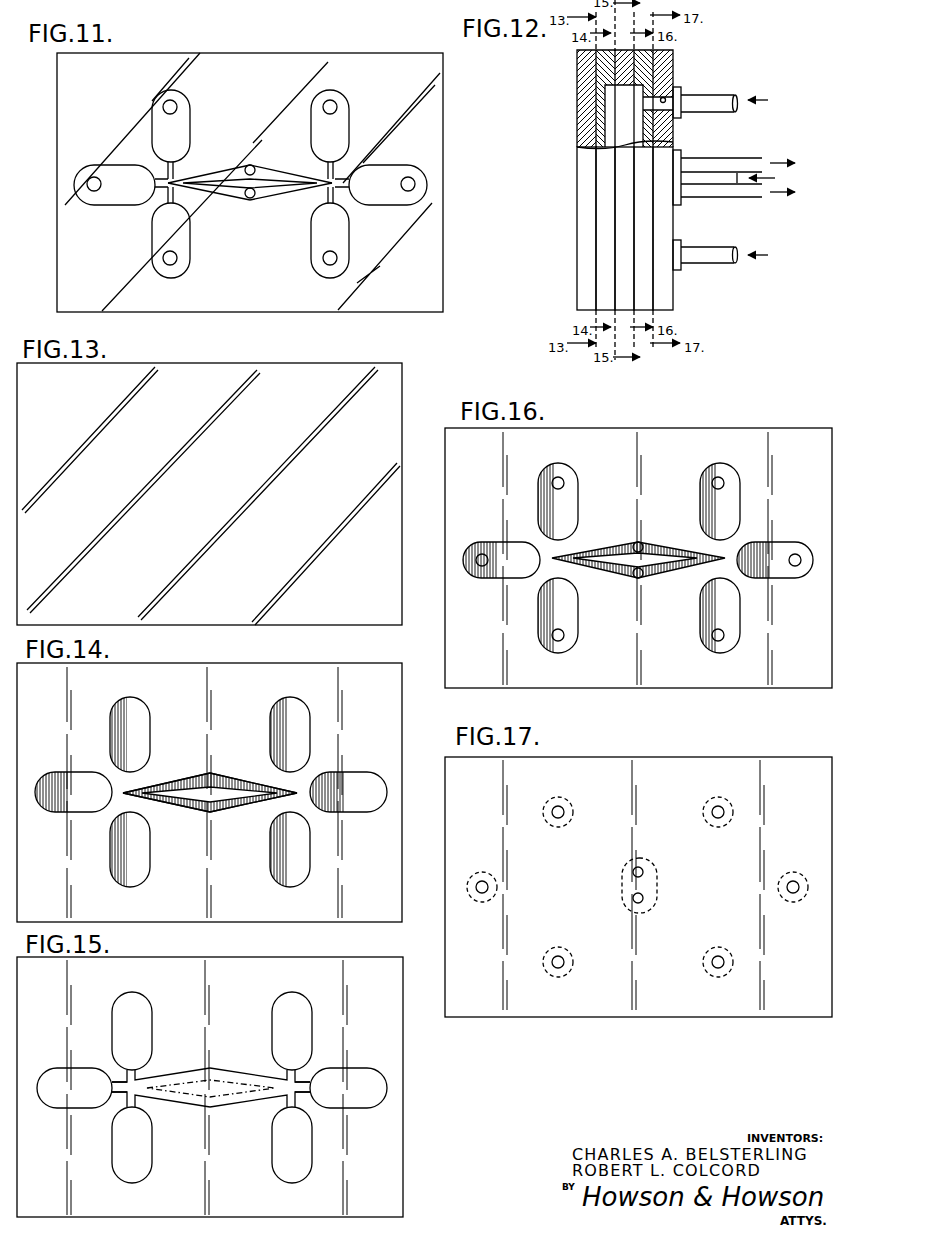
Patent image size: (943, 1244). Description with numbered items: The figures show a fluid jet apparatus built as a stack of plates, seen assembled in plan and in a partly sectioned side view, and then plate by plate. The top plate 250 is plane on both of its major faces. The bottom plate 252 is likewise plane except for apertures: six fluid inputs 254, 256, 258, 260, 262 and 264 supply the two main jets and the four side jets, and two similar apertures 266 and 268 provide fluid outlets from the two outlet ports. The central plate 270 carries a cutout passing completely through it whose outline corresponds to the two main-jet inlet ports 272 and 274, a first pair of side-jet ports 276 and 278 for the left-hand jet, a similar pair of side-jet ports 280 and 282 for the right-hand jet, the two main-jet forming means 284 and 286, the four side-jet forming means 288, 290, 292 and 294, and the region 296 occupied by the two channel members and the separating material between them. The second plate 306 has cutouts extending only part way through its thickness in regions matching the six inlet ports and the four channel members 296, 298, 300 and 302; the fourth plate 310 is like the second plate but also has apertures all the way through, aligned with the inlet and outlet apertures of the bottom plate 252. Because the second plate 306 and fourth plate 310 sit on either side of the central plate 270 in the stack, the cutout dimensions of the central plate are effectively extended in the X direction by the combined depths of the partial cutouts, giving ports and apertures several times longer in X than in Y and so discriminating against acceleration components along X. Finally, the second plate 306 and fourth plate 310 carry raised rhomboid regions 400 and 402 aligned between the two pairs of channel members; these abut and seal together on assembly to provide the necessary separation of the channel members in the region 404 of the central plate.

In FIG. 11, the top plate 250 is at (443, 117).
In FIG. 12, the top plate 250 is at (575, 182).
In FIG. 13, the top plate 250 is at (362, 367).
In FIG. 12, the bottom plate 252 is at (668, 293).
In FIG. 17, the bottom plate 252 is at (680, 1010).
In FIG. 11, the fluid input 254 is at (92, 191).
In FIG. 16, the fluid input 254 is at (482, 557).
In FIG. 17, the fluid input 254 is at (482, 883).
In FIG. 11, the fluid input 256 is at (409, 178).
In FIG. 16, the fluid input 256 is at (795, 555).
In FIG. 17, the fluid input 256 is at (793, 883).
In FIG. 11, the fluid input 258 is at (163, 106).
In FIG. 16, the fluid input 258 is at (560, 482).
In FIG. 17, the fluid input 258 is at (558, 808).
In FIG. 11, the fluid input 260 is at (178, 262).
In FIG. 16, the fluid input 260 is at (557, 637).
In FIG. 17, the fluid input 260 is at (558, 958).
In FIG. 11, the fluid input 262 is at (324, 104).
In FIG. 12, the fluid input 262 is at (673, 88).
In FIG. 16, the fluid input 262 is at (718, 482).
In FIG. 17, the fluid input 262 is at (718, 808).
In FIG. 11, the fluid input 264 is at (338, 260).
In FIG. 16, the fluid input 264 is at (717, 637).
In FIG. 17, the fluid input 264 is at (718, 958).
In FIG. 11, the outlet aperture 266 is at (250, 165).
In FIG. 16, the outlet aperture 266 is at (640, 545).
In FIG. 17, the outlet aperture 266 is at (638, 868).
In FIG. 11, the outlet aperture 268 is at (250, 198).
In FIG. 16, the outlet aperture 268 is at (638, 577).
In FIG. 17, the outlet aperture 268 is at (638, 902).
In FIG. 12, the central plate 270 is at (620, 262).
In FIG. 15, the central plate 270 is at (403, 1122).
In FIG. 11, the main-jet inlet port 272 is at (91, 166).
In FIG. 14, the main-jet inlet port 272 is at (65, 807).
In FIG. 15, the main-jet inlet port 272 is at (74, 1088).
In FIG. 16, the main-jet inlet port 272 is at (497, 575).
In FIG. 11, the main-jet inlet port 274 is at (380, 166).
In FIG. 14, the main-jet inlet port 274 is at (358, 775).
In FIG. 15, the main-jet inlet port 274 is at (348, 1088).
In FIG. 16, the main-jet inlet port 274 is at (785, 575).
In FIG. 11, the side-jet port 276 is at (177, 92).
In FIG. 14, the side-jet port 276 is at (132, 700).
In FIG. 15, the side-jet port 276 is at (118, 1023).
In FIG. 16, the side-jet port 276 is at (573, 505).
In FIG. 11, the side-jet port 278 is at (160, 267).
In FIG. 14, the side-jet port 278 is at (118, 868).
In FIG. 15, the side-jet port 278 is at (118, 1153).
In FIG. 16, the side-jet port 278 is at (573, 625).
In FIG. 11, the side-jet port 280 is at (341, 90).
In FIG. 12, the side-jet port 280 is at (607, 110).
In FIG. 14, the side-jet port 280 is at (293, 700).
In FIG. 15, the side-jet port 280 is at (277, 1015).
In FIG. 16, the side-jet port 280 is at (703, 492).
In FIG. 11, the side-jet port 282 is at (322, 272).
In FIG. 14, the side-jet port 282 is at (283, 878).
In FIG. 15, the side-jet port 282 is at (277, 1150).
In FIG. 16, the side-jet port 282 is at (707, 615).
In FIG. 11, the main-jet forming means 284 is at (158, 188).
In FIG. 15, the main-jet forming means 284 is at (117, 1094).
In FIG. 11, the main-jet forming means 286 is at (344, 190).
In FIG. 15, the main-jet forming means 286 is at (303, 1082).
In FIG. 15, the side-jet forming means 288 is at (137, 1074).
In FIG. 15, the side-jet forming means 290 is at (137, 1098).
In FIG. 15, the side-jet forming means 292 is at (285, 1074).
In FIG. 15, the side-jet forming means 294 is at (285, 1098).
In FIG. 11, the channel member region 296 is at (206, 173).
In FIG. 14, the channel member region 296 is at (180, 783).
In FIG. 11, the channel member 298 is at (206, 193).
In FIG. 14, the channel member 298 is at (177, 803).
In FIG. 11, the channel member 300 is at (277, 173).
In FIG. 14, the channel member 300 is at (228, 782).
In FIG. 11, the channel member 302 is at (277, 193).
In FIG. 14, the channel member 302 is at (232, 803).
In FIG. 12, the second plate 306 is at (600, 227).
In FIG. 14, the second plate 306 is at (363, 663).
In FIG. 12, the fourth plate 310 is at (643, 227).
In FIG. 16, the fourth plate 310 is at (783, 428).
In FIG. 14, the raised rhomboid region 400 is at (200, 795).
In FIG. 16, the raised rhomboid region 402 is at (612, 555).
In FIG. 15, the channel separation region 404 is at (198, 1078).